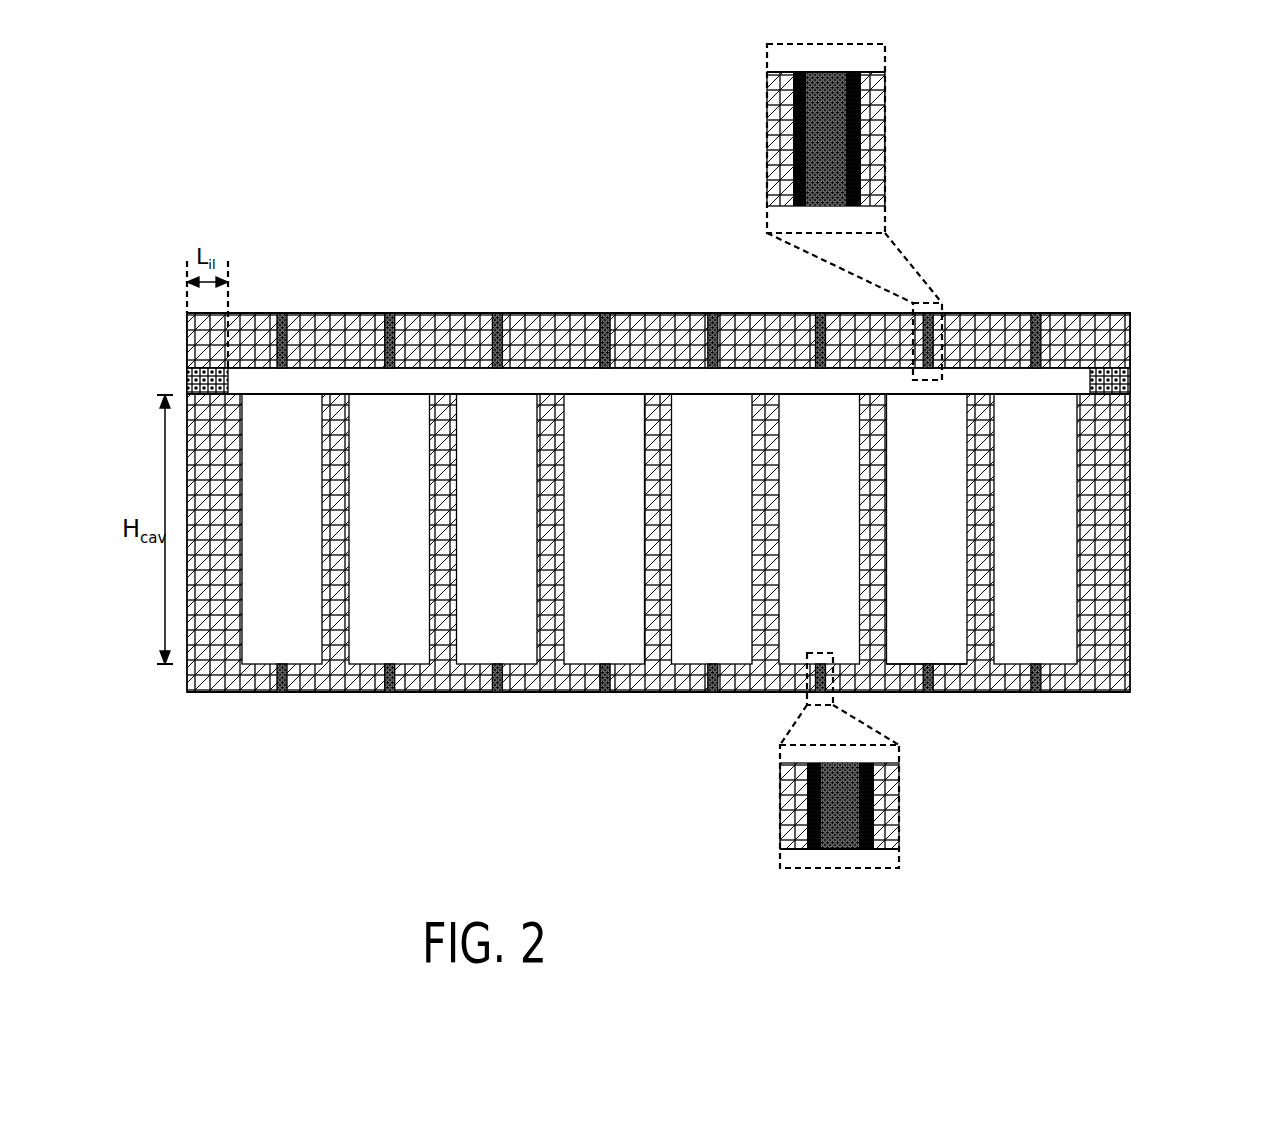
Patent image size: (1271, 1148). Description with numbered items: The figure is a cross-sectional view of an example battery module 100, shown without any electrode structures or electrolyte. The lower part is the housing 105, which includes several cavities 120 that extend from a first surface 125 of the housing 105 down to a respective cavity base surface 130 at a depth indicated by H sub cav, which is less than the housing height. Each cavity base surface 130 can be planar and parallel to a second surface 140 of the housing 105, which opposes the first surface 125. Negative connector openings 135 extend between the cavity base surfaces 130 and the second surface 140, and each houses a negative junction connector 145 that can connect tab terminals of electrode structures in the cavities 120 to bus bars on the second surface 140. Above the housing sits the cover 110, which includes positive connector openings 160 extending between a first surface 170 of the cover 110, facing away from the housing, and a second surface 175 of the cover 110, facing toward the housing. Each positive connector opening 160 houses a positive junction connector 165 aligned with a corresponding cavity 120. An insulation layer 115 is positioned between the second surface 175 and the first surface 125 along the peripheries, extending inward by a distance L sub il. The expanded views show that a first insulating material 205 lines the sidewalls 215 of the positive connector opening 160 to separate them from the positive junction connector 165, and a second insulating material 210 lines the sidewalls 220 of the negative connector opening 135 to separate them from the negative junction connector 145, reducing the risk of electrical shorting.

The battery module 100 is at (1172, 563).
The housing 105 is at (1118, 458).
The cover 110 is at (1115, 332).
The insulation layer 115 is at (1115, 385).
The cavities 120 is at (978, 583).
The first surface of the housing 125 is at (333, 394).
The cavity base surface 130 is at (956, 656).
The negative connector openings 135 is at (1045, 676).
The second surface of the housing 140 is at (333, 692).
The negative junction connectors 145 is at (1035, 692).
The positive connector openings 160 is at (1043, 339).
The positive junction connectors 165 is at (1036, 313).
The first surface of the cover 170 is at (781, 313).
The second surface of the cover 175 is at (795, 368).
The first insulating material 205 is at (797, 72).
The second insulating material 210 is at (866, 850).
The sidewalls of the positive connector opening 215 is at (793, 103).
The sidewalls of the negative connector opening 220 is at (807, 792).